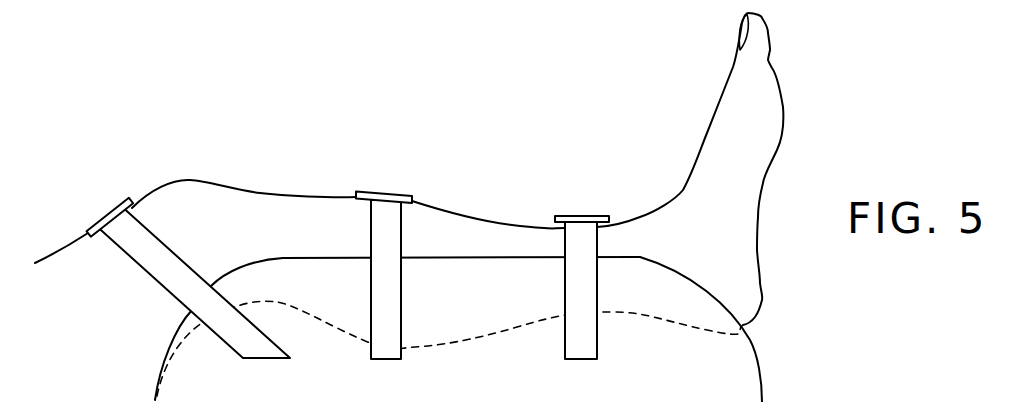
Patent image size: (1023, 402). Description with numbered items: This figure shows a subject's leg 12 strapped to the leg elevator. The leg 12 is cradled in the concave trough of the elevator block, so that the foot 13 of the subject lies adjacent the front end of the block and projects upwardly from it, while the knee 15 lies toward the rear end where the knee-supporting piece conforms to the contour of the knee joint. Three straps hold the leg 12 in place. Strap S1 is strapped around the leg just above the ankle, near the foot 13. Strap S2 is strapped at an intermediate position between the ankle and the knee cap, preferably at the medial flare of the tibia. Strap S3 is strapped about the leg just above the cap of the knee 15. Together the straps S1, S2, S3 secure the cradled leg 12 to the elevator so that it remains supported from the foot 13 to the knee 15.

The leg 12 is at (481, 230).
The foot 13 is at (773, 102).
The knee 15 is at (207, 192).
The strap S1 is at (578, 214).
The strap S2 is at (386, 194).
The strap S3 is at (104, 214).